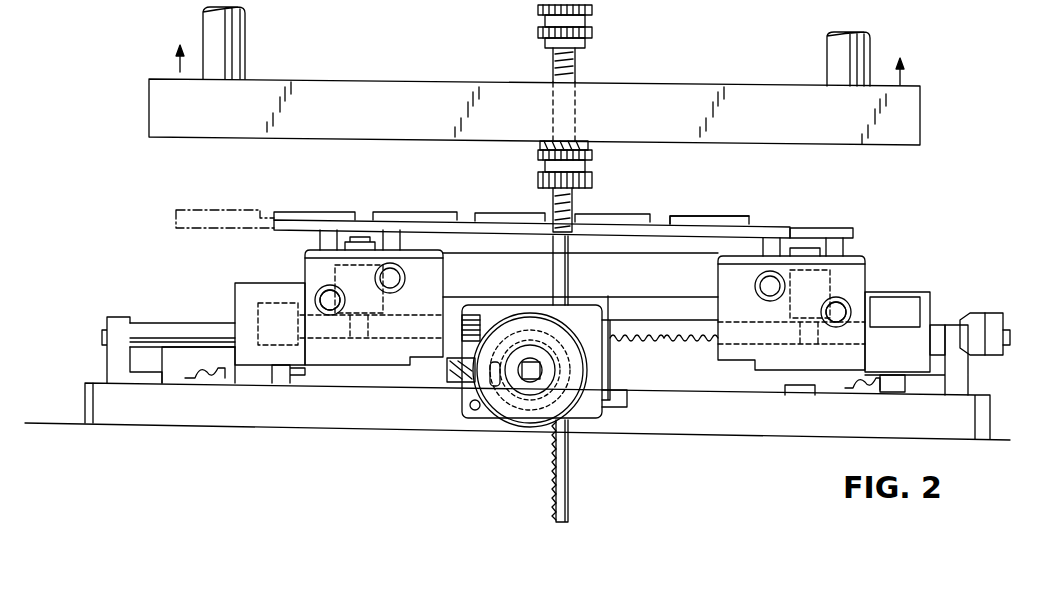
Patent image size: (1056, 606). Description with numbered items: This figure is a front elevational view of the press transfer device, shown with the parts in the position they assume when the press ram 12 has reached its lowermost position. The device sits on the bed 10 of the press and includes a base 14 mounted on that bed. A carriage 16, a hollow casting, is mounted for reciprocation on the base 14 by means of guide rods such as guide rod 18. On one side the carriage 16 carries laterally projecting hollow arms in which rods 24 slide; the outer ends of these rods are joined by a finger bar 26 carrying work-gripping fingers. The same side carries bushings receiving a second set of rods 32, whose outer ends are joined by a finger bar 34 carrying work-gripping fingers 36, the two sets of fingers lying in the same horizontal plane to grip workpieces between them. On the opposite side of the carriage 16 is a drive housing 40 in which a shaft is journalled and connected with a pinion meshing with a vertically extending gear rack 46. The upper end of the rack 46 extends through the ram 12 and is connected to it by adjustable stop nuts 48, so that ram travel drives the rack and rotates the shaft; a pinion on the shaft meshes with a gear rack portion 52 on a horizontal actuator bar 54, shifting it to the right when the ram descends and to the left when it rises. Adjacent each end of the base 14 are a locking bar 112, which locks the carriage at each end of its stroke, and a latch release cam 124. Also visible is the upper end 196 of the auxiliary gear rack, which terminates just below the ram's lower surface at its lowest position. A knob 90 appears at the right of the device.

The bed 10 is at (55, 425).
The ram 12 is at (375, 82).
The base 14 is at (733, 427).
The carriage 16 is at (296, 272).
The guide rod 18 is at (205, 326).
The rod 24 is at (331, 311).
The finger bar 26 is at (823, 232).
The rod 32 is at (765, 290).
The finger bar 34 is at (678, 233).
The work-gripping finger 36 is at (722, 216).
The drive housing 40 is at (575, 310).
The gear rack 46 is at (573, 200).
The adjustable stop nut 48 is at (538, 30).
The gear rack portion 52 is at (645, 345).
The actuator bar 54 is at (675, 345).
The knob 90 is at (985, 302).
The locking bar 112 is at (200, 382).
The latch release cam 124 is at (270, 384).
The upper end 196 is at (566, 145).